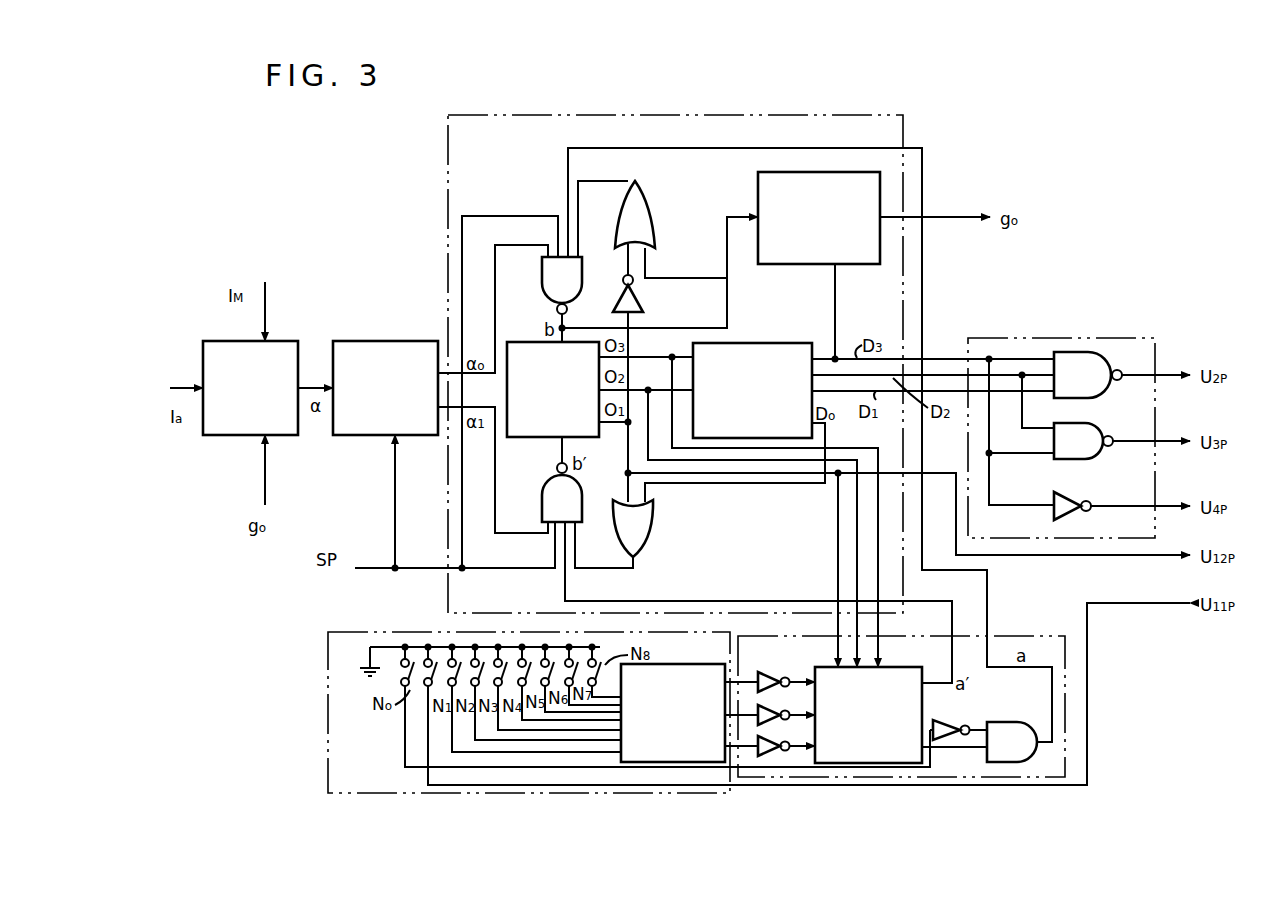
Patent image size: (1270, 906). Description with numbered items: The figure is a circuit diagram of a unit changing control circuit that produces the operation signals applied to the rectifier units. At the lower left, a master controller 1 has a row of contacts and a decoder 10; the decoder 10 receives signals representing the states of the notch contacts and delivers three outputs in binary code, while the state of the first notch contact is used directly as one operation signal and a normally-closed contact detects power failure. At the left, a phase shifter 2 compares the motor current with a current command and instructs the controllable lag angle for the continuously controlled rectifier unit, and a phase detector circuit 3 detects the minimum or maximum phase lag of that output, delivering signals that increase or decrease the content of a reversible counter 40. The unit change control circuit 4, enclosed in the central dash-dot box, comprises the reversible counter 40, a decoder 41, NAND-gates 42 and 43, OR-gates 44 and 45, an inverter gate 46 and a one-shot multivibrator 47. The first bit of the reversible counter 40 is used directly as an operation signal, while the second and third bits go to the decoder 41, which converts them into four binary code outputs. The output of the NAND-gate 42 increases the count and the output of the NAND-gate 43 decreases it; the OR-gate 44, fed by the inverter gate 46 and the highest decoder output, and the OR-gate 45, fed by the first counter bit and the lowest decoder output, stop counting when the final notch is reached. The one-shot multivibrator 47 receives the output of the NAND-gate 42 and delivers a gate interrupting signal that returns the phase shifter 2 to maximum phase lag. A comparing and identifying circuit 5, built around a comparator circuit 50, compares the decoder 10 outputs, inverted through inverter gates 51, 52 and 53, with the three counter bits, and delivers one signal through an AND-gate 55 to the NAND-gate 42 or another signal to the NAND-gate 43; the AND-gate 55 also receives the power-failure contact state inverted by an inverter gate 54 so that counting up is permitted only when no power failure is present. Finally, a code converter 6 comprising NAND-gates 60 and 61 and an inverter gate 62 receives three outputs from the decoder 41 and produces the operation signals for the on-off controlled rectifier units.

The master controller 1 is at (345, 632).
The phase shifter 2 is at (225, 435).
The phase detector circuit 3 is at (375, 341).
The unit change control circuit 4 is at (903, 120).
The comparing and identifying circuit 5 is at (1065, 690).
The code converter 6 is at (1080, 338).
The decoder 10 is at (685, 650).
The reversible counter 40 is at (550, 437).
The decoder 41 is at (775, 343).
The NAND-gate 42 is at (542, 280).
The NAND-gate 43 is at (542, 500).
The OR-gate 44 is at (653, 200).
The OR-gate 45 is at (650, 535).
The inverter gate 46 is at (655, 302).
The one-shot multivibrator 47 is at (862, 264).
The comparator circuit 50 is at (922, 658).
The inverter gate 51 is at (778, 660).
The inverter gate 52 is at (790, 700).
The inverter gate 53 is at (768, 756).
The inverter gate 54 is at (945, 712).
The AND-gate 55 is at (1010, 712).
The NAND-gate 60 is at (1118, 352).
The NAND-gate 61 is at (1100, 428).
The inverter gate 62 is at (1080, 498).